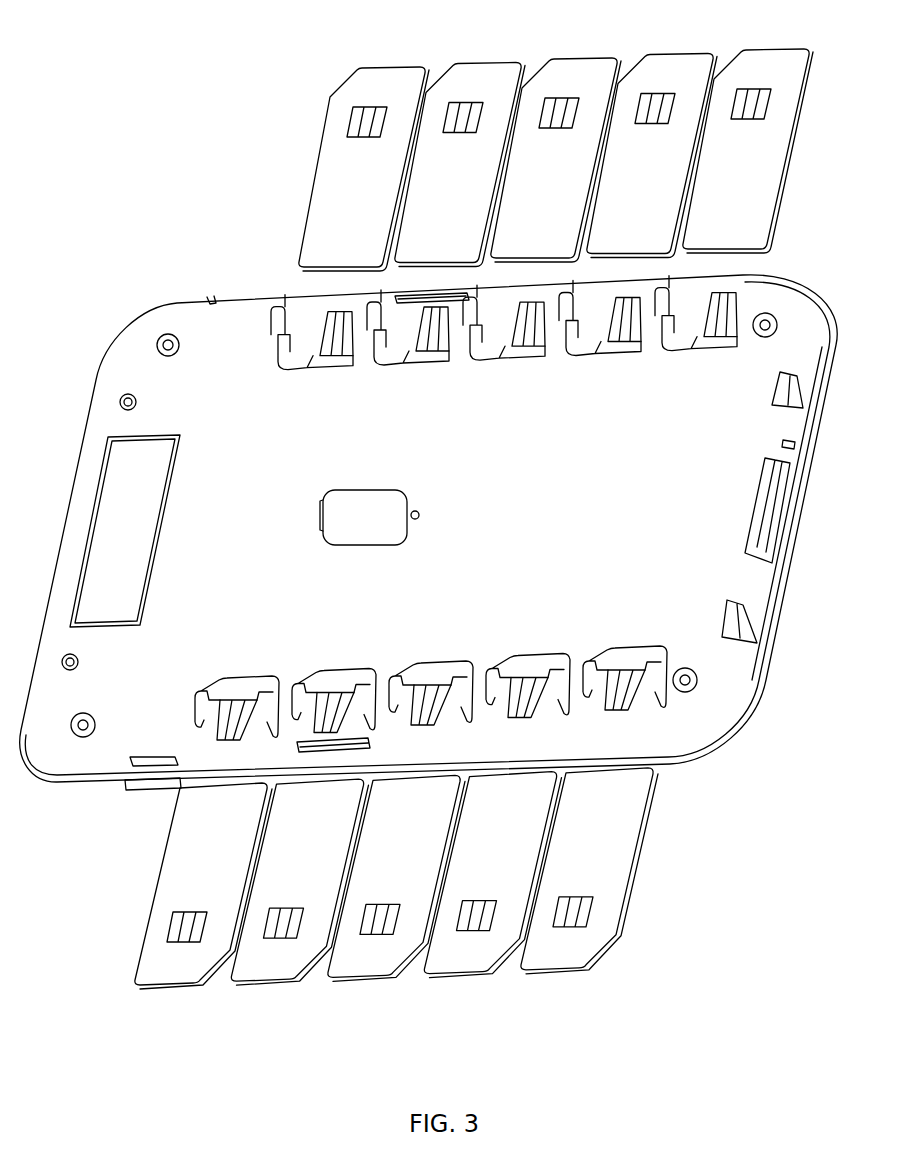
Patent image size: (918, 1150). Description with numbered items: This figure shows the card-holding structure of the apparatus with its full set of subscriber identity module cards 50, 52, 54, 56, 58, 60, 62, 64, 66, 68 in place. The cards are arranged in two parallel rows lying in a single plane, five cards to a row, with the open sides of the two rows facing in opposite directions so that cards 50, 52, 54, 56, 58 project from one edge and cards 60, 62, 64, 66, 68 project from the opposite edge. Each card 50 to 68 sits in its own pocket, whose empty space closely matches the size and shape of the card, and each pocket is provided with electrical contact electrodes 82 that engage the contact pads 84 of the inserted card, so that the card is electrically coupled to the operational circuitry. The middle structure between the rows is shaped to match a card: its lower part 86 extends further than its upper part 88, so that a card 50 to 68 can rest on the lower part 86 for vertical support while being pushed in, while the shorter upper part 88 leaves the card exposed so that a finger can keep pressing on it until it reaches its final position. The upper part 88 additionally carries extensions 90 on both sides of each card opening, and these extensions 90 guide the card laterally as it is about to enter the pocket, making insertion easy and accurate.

The subscriber identity module card 50 is at (372, 146).
The subscriber identity module card 52 is at (470, 138).
The subscriber identity module card 54 is at (565, 136).
The subscriber identity module card 56 is at (666, 130).
The subscriber identity module card 58 is at (759, 126).
The subscriber identity module card 60 is at (183, 943).
The subscriber identity module card 62 is at (299, 899).
The subscriber identity module card 64 is at (396, 896).
The subscriber identity module card 66 is at (492, 893).
The subscriber identity module card 68 is at (589, 889).
The electrical contact electrodes 82 is at (338, 322).
The contact pads 84 is at (368, 107).
The lower part 86 is at (488, 313).
The upper part 88 is at (220, 535).
The extensions 90 is at (270, 362).